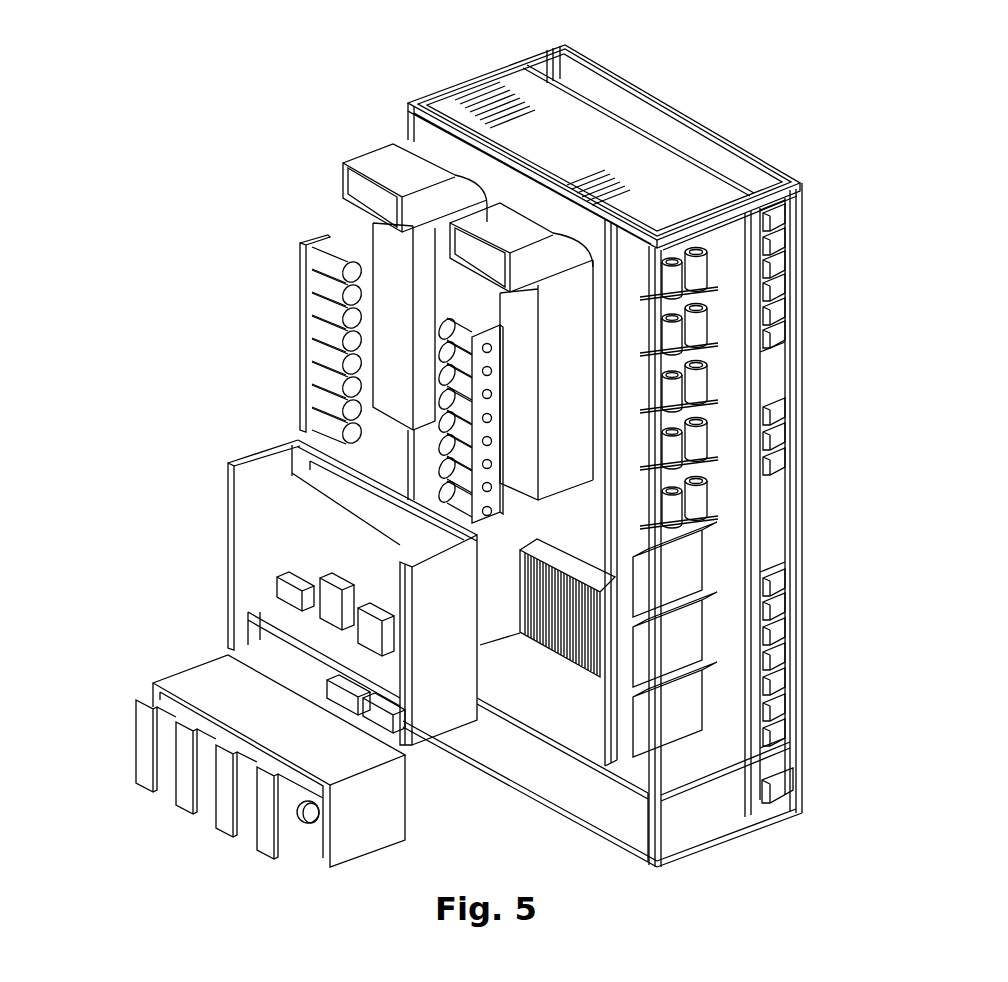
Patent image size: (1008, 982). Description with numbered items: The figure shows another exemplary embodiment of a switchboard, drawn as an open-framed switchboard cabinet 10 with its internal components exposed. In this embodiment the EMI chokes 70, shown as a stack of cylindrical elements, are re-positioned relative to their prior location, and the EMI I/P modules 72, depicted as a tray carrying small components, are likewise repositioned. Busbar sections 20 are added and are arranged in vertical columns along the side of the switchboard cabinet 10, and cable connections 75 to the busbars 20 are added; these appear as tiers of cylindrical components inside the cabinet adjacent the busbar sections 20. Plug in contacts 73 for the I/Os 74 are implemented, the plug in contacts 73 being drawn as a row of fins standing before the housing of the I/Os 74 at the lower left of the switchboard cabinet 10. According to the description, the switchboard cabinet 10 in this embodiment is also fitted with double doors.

The switchboard cabinet 10 is at (456, 73).
The busbar sections 20 is at (788, 283).
The EMI chokes 70 is at (293, 335).
The EMI I/P modules 72 is at (227, 506).
The plug in contacts 73 is at (125, 740).
The I/Os 74 is at (297, 866).
The cable connections 75 is at (712, 430).